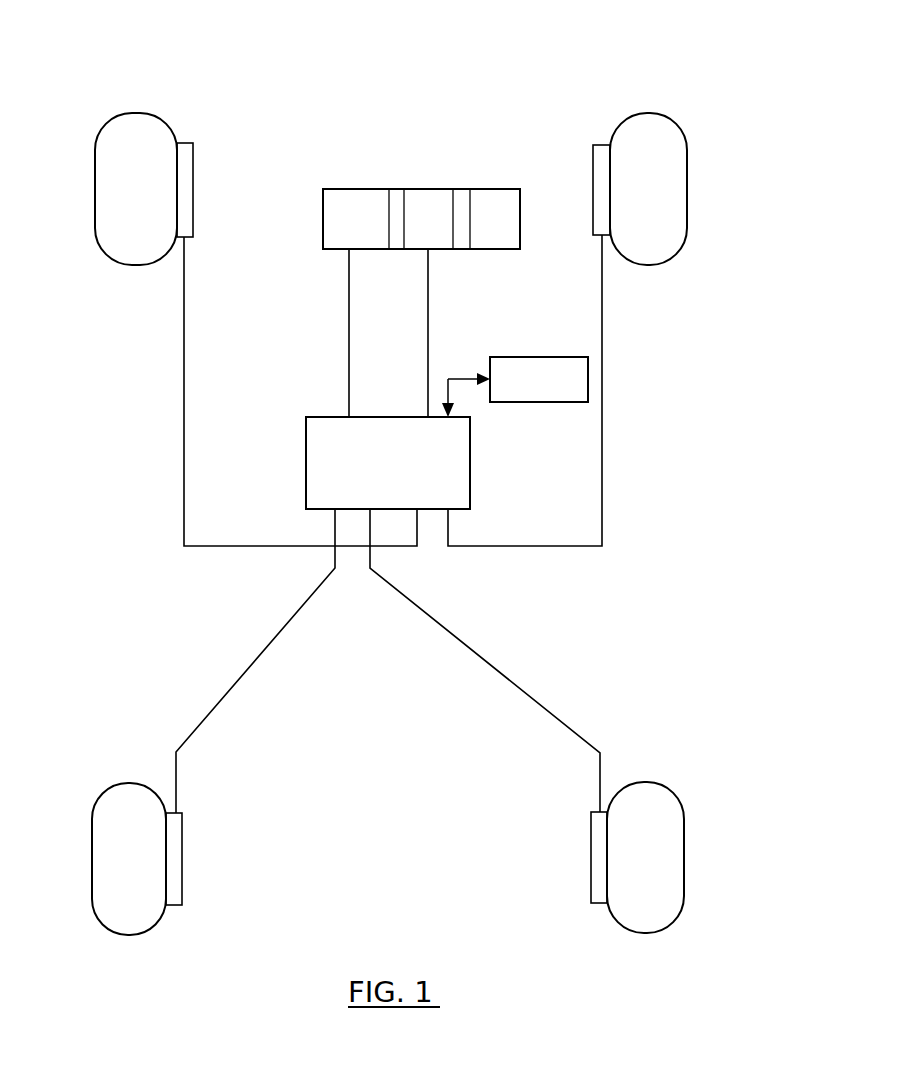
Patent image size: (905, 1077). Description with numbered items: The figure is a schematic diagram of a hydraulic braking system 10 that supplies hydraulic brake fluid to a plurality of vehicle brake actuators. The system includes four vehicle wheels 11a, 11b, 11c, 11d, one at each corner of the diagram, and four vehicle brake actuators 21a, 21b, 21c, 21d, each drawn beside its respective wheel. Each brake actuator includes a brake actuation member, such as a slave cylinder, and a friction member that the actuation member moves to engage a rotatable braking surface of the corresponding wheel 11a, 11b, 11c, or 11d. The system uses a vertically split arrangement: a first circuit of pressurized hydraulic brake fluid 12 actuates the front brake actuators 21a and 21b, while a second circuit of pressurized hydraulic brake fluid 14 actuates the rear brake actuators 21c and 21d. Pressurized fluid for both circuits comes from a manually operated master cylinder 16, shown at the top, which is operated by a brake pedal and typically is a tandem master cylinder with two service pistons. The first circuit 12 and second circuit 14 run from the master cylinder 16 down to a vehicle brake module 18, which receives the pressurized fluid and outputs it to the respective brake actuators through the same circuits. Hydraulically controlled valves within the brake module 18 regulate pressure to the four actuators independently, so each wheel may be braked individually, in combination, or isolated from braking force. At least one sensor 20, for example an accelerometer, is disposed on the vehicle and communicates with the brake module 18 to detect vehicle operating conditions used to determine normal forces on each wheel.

The hydraulic braking system 10 is at (384, 78).
The vehicle wheel 11a is at (95, 205).
The vehicle wheel 11b is at (687, 143).
The vehicle wheel 11c is at (92, 828).
The vehicle wheel 11d is at (684, 887).
The first circuit of pressurized hydraulic brake fluid 12 is at (348, 360).
The second circuit of pressurized hydraulic brake fluid 14 is at (428, 337).
The master cylinder 16 is at (437, 189).
The vehicle brake module 18 is at (470, 432).
The sensor 20 is at (523, 353).
The vehicle brake actuator 21a is at (193, 177).
The vehicle brake actuator 21b is at (593, 160).
The vehicle brake actuator 21c is at (182, 882).
The vehicle brake actuator 21d is at (591, 835).